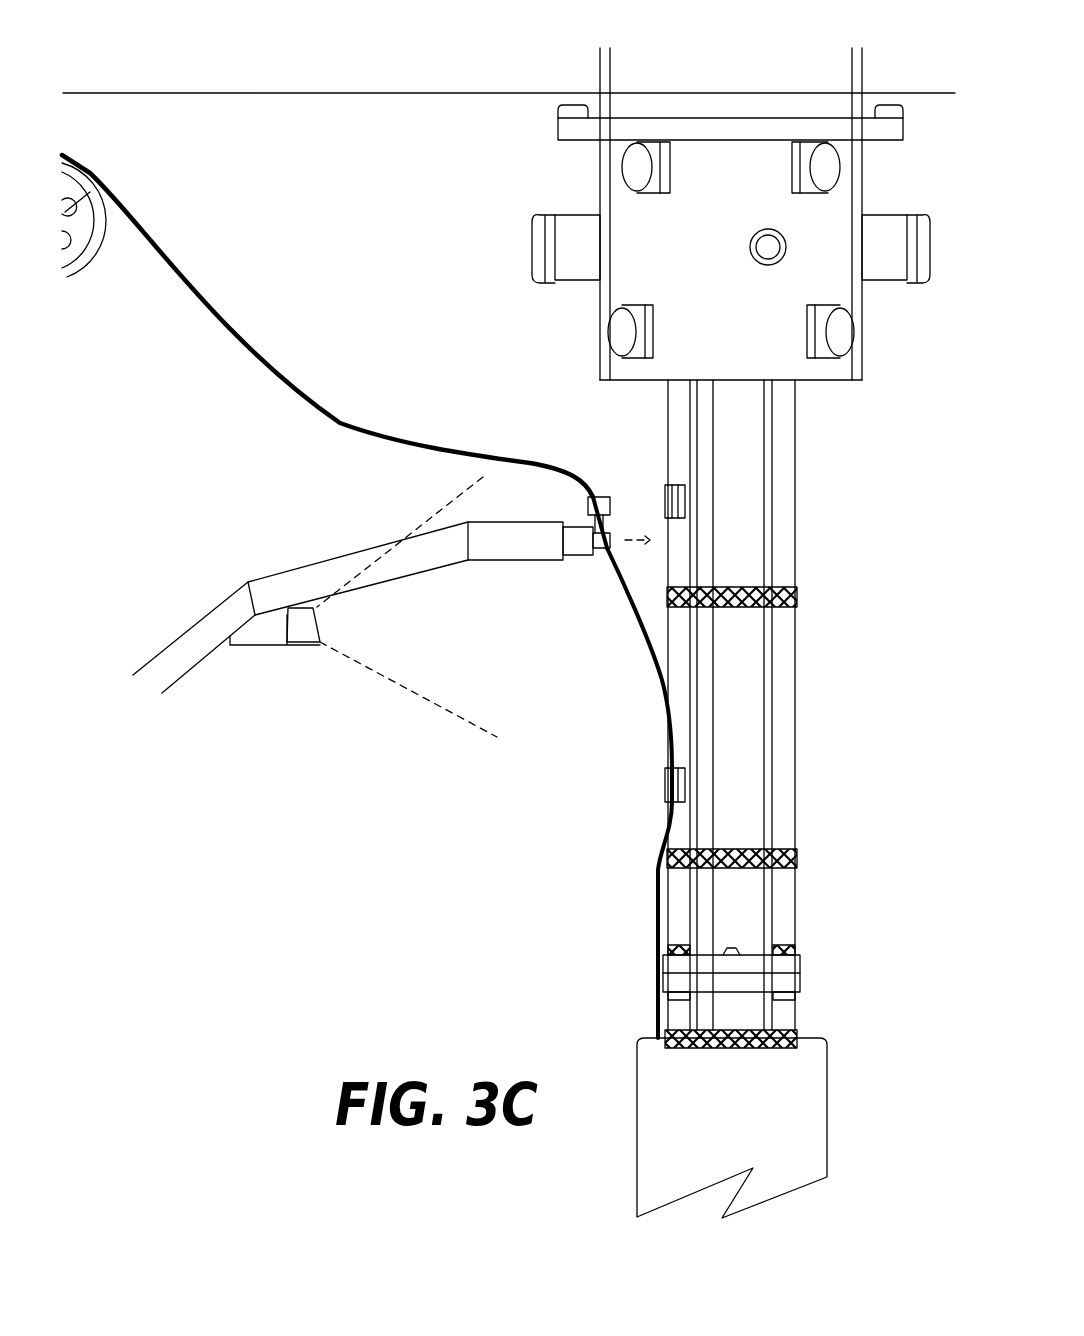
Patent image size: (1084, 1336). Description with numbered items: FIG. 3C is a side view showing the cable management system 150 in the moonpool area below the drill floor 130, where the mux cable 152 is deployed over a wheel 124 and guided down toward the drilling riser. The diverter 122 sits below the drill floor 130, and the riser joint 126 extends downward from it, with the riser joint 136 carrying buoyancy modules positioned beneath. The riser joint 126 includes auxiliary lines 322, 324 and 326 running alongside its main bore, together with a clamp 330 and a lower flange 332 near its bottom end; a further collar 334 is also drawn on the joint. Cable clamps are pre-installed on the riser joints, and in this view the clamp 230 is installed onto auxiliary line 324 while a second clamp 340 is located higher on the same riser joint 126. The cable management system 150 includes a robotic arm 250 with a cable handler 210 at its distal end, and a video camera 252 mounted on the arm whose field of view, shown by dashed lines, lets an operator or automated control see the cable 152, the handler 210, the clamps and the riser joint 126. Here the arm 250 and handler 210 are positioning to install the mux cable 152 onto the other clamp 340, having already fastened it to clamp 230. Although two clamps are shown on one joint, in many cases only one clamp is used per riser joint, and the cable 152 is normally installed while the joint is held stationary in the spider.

The diverter 122 is at (808, 363).
The wheel 124 is at (67, 277).
The riser joint 126 is at (795, 485).
The drill floor 130 is at (302, 90).
The riser joint 136 is at (827, 1130).
The cable management system 150 is at (363, 605).
The mux cable 152 is at (313, 413).
The cable handler 210 is at (601, 575).
The clamp 230 is at (665, 787).
The robotic arm 250 is at (277, 588).
The video camera 252 is at (300, 633).
The auxiliary line 322 is at (780, 653).
The auxiliary line 324 is at (677, 450).
The auxiliary line 326 is at (707, 419).
The clamp 330 is at (797, 853).
The lower flange 332 is at (800, 957).
The upper collar 334 is at (797, 598).
The clamp 340 is at (665, 498).